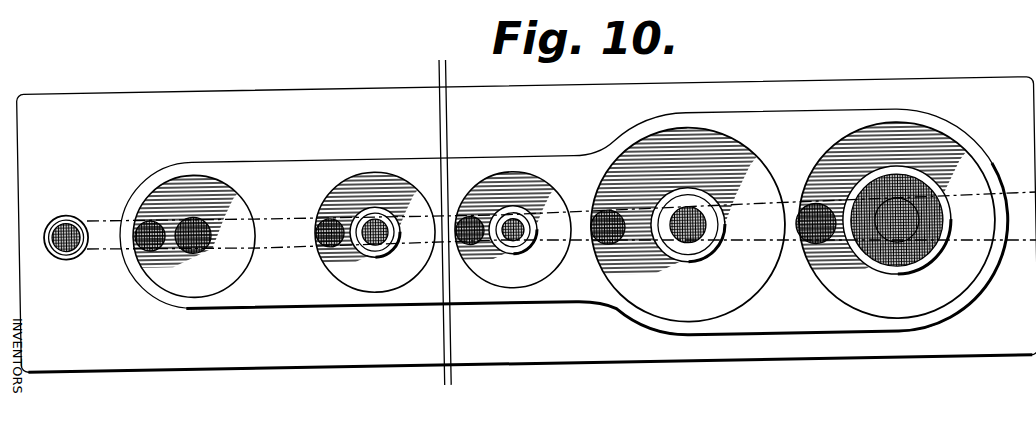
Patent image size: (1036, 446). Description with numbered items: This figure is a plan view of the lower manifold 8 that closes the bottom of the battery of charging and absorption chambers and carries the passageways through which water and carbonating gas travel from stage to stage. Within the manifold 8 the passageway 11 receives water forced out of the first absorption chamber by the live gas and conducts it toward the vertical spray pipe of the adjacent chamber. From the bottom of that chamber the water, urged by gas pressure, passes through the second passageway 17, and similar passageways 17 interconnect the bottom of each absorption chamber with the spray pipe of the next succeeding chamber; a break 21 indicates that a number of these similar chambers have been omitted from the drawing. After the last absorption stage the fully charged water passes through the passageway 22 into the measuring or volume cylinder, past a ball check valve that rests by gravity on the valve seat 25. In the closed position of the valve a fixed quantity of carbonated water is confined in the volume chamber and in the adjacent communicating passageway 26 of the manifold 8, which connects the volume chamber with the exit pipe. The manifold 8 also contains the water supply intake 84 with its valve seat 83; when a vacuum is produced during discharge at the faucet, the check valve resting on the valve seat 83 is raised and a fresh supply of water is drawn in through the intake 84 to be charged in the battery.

The lower manifold 8 is at (851, 358).
The passageway 11 is at (767, 238).
The second passageway 17 is at (430, 239).
The break 21 is at (452, 75).
The passageway 22 is at (300, 238).
The valve seat 25 is at (193, 248).
The communicating passageway 26 is at (107, 233).
The valve seat 83 is at (891, 277).
The water supply intake 84 is at (1022, 241).